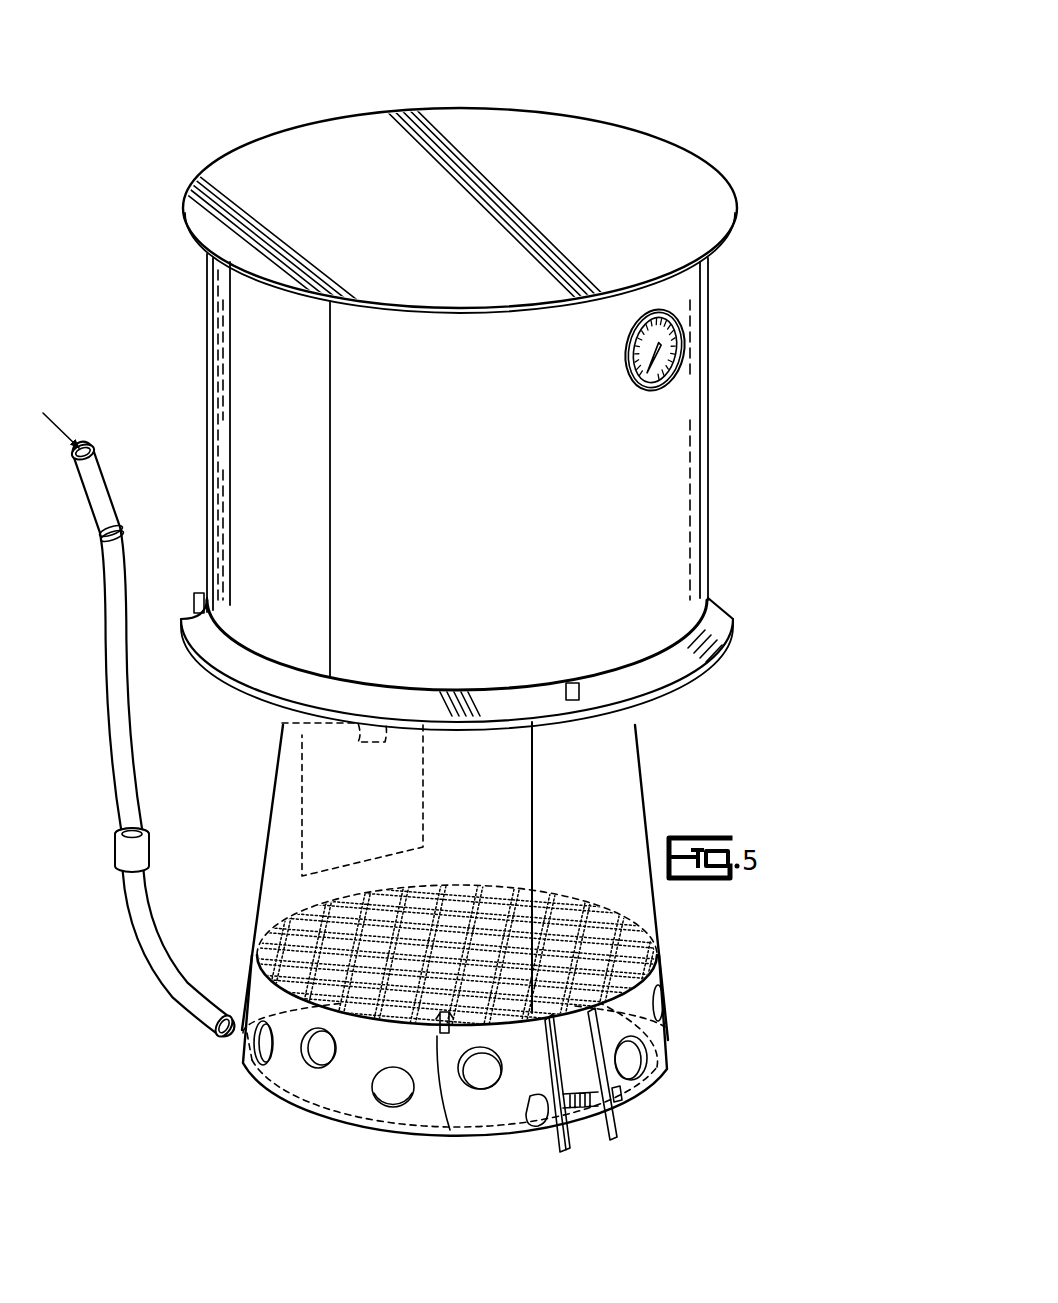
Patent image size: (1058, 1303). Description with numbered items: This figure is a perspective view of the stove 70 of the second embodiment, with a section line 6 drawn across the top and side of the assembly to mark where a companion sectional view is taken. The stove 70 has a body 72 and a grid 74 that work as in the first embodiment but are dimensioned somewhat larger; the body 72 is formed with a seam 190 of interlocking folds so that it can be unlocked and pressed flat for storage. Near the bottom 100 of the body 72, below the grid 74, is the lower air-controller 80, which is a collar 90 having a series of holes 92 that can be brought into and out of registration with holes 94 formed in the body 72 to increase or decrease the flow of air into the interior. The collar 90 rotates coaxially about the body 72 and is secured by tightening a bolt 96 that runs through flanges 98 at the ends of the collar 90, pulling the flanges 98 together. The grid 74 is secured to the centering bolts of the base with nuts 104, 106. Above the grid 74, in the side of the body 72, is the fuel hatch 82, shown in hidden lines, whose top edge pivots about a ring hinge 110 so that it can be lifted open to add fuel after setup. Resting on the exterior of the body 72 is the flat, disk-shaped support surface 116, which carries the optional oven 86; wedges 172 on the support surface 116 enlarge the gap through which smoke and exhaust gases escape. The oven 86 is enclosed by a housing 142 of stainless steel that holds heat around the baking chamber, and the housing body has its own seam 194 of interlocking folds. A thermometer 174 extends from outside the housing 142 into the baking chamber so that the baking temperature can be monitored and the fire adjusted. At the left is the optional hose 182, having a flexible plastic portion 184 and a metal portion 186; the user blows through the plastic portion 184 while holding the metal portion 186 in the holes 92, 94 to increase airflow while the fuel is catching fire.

The stove 70 is at (589, 80).
The section line 6- 6 is at (318, 136).
The oven 86 is at (729, 456).
The housing 142 is at (686, 527).
The seam 194 is at (332, 632).
The thermometer 174 is at (672, 357).
The support surface 116 is at (713, 614).
The wedges 172 is at (200, 601).
The body 72 is at (642, 759).
The seam 190 is at (532, 779).
The fuel hatch 82 is at (301, 787).
The ring hinge 110 is at (284, 731).
The grid 74 is at (612, 940).
The lower air-controller 80 is at (676, 993).
The bottom 100 is at (661, 1085).
The collar 90 is at (428, 1110).
The holes 92 is at (383, 1078).
The holes 94 is at (392, 1100).
The nut 106 is at (440, 1021).
The nut 104 is at (452, 1130).
The flanges 98 is at (598, 1120).
The bolt 96 is at (532, 1113).
The hose 182 is at (141, 718).
The flexible plastic portion 184 is at (134, 792).
The metal portion 186 is at (171, 992).